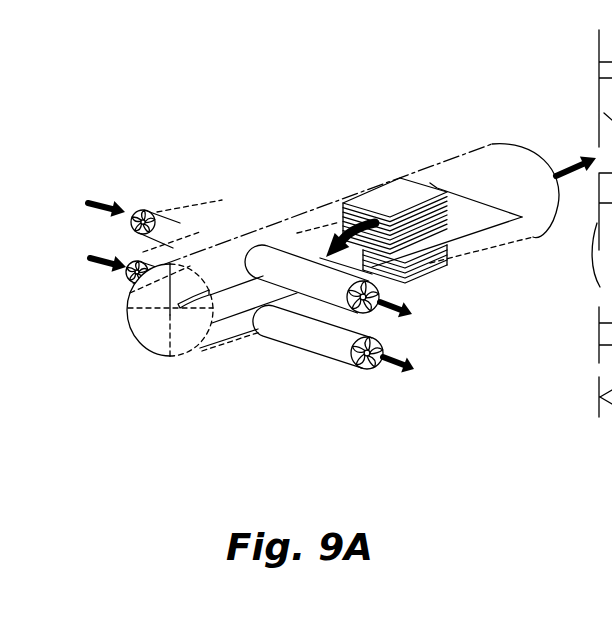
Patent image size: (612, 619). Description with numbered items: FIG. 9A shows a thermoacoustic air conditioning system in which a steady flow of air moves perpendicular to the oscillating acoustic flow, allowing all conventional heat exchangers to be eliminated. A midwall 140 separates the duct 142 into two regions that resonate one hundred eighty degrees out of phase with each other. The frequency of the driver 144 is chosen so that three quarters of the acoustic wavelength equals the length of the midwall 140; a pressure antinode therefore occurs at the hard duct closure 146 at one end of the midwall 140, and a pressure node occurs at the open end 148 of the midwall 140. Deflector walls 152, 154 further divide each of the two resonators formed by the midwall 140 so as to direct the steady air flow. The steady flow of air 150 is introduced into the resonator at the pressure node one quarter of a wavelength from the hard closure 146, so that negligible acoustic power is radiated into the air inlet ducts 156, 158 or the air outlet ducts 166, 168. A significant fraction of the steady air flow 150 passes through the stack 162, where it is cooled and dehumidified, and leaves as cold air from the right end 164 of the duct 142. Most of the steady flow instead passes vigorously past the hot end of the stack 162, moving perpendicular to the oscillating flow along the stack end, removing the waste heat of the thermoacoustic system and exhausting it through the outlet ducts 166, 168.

The midwall 140 is at (457, 222).
The duct 142 is at (467, 155).
The driver 144 is at (197, 303).
The hard duct closure 146 is at (150, 322).
The open end 148 is at (480, 203).
The steady flow of air 150 is at (88, 205).
The deflector wall 152 is at (282, 227).
The deflector wall 154 is at (217, 337).
The air inlet duct 156 is at (128, 278).
The air inlet duct 158 is at (193, 227).
The stack 162 is at (422, 265).
The right end 164 is at (541, 241).
The air outlet duct 166 is at (385, 340).
The air outlet duct 168 is at (333, 357).